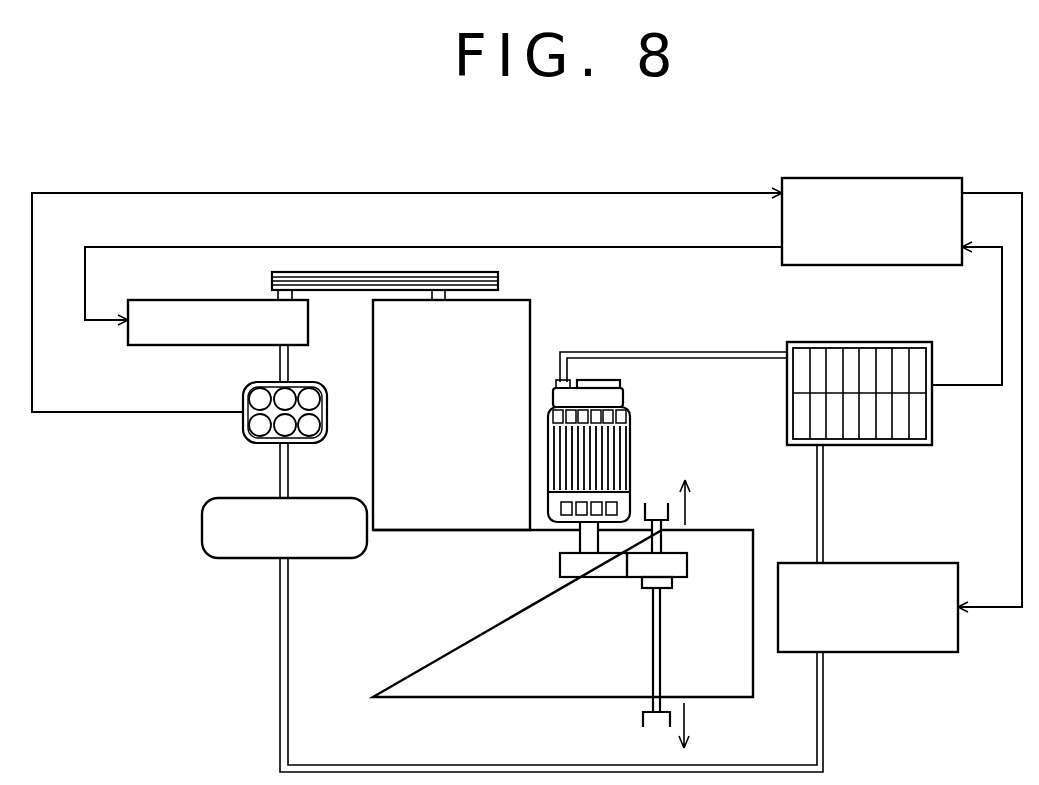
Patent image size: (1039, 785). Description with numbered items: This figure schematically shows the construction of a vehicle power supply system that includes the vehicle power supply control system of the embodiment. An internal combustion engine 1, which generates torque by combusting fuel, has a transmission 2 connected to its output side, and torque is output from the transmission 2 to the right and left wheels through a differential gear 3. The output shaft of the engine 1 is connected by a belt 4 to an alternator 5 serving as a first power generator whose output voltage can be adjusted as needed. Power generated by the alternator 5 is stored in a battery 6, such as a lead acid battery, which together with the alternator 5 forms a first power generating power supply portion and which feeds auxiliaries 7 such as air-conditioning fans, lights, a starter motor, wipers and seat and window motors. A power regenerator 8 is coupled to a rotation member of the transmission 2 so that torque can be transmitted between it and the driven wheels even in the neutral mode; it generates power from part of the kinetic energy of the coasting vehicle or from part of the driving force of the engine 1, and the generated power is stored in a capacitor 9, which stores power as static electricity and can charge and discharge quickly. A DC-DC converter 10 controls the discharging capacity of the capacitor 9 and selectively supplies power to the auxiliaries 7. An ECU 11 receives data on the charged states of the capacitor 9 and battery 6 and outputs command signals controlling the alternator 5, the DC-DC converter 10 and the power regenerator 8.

The engine 1 is at (531, 322).
The transmission 2 is at (530, 698).
The differential gear 3 is at (688, 566).
The belt 4 is at (375, 272).
The alternator 5 is at (310, 322).
The battery 6 is at (243, 422).
The auxiliaries 7 is at (202, 528).
The power regenerator 8 is at (632, 430).
The capacitor 9 is at (858, 342).
The DC-DC converter 10 is at (868, 653).
The ECU 11 is at (870, 178).